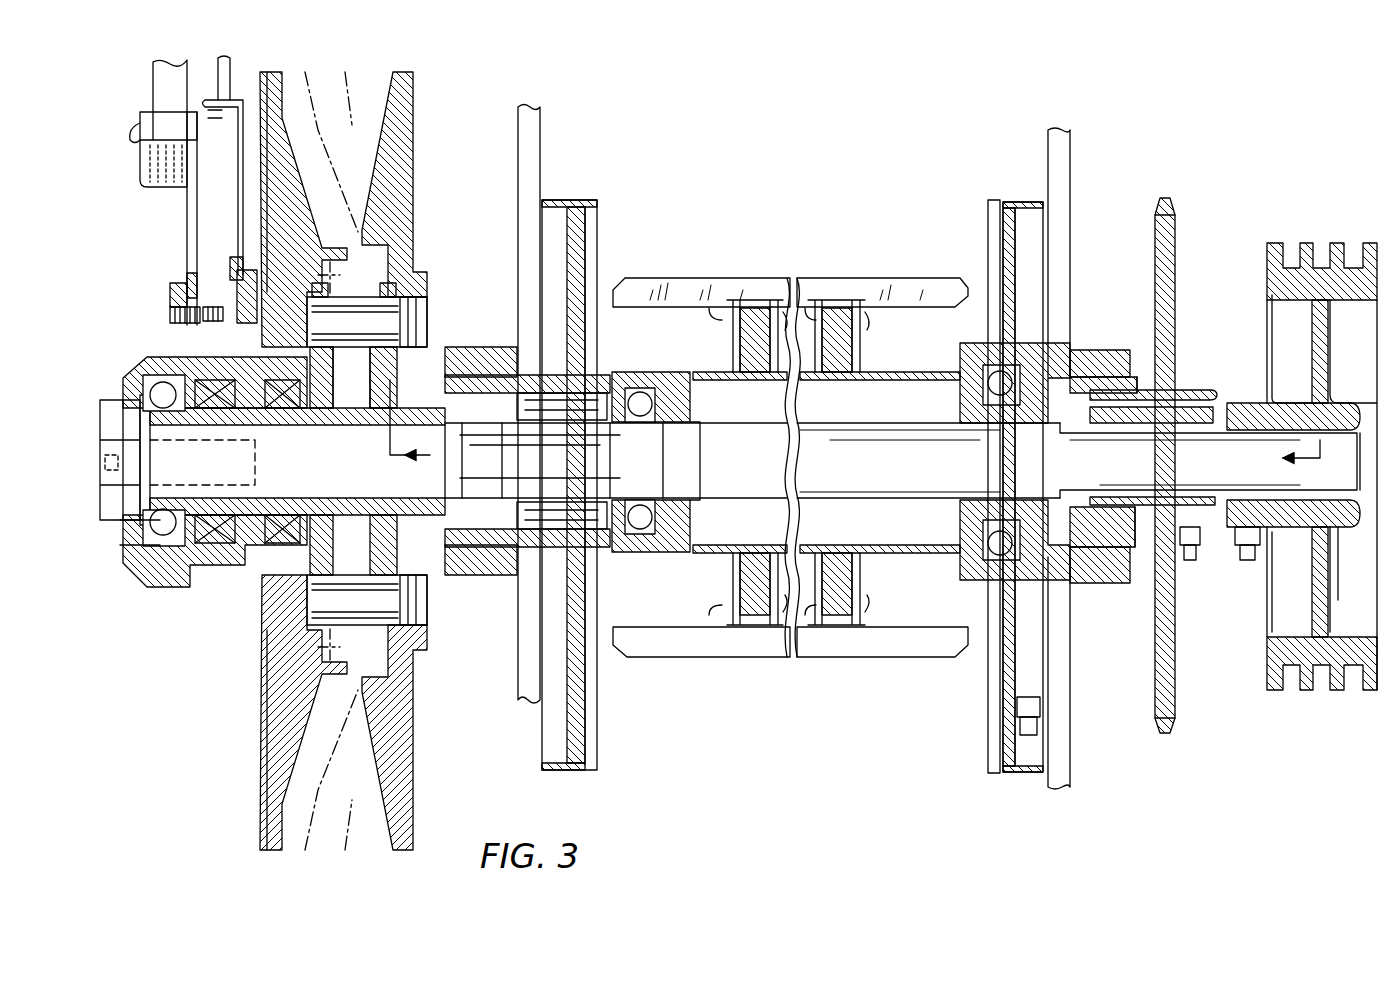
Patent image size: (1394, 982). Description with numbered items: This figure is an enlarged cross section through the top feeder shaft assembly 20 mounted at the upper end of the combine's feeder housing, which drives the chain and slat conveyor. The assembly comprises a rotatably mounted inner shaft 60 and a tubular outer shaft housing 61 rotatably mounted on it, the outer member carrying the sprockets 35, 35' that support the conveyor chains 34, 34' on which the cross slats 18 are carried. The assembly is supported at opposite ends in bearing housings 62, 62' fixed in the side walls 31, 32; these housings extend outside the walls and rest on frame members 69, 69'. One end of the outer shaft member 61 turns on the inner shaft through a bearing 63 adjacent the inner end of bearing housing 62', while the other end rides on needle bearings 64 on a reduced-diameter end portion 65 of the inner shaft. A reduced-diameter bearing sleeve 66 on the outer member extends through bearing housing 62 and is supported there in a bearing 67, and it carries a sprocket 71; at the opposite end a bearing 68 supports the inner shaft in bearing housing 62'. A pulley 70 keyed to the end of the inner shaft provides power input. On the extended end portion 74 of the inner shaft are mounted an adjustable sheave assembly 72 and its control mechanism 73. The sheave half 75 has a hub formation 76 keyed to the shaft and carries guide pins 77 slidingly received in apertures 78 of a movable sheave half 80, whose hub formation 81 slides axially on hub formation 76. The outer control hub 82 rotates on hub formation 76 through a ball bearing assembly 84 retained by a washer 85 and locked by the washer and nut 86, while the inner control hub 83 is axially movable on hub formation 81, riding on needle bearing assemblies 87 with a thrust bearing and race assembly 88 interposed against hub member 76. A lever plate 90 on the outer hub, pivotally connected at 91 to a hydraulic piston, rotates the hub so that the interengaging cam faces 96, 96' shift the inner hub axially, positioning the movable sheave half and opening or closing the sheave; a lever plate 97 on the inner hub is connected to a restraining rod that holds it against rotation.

The cross slats 18 is at (878, 288).
The top feeder shaft assembly 20 is at (1087, 308).
The side wall 31 is at (588, 272).
The side wall 32 is at (990, 242).
The chain 34 is at (851, 589).
The chain 34' is at (740, 589).
The sprocket 35 is at (837, 310).
The sprocket 35' is at (748, 309).
The inner shaft 60 is at (892, 477).
The tubular outer shaft housing 61 is at (872, 372).
The bearing housing 62 is at (1010, 367).
The bearing housing 62' is at (644, 440).
The bearing 63 is at (652, 555).
The needle bearings 64 is at (1140, 385).
The end portion 65 is at (1200, 535).
The bearing sleeve 66 is at (1082, 560).
The bearing 67 is at (980, 575).
The bearing 68 is at (476, 358).
The frame member 69 is at (1129, 497).
The frame member 69' is at (527, 559).
The pulley 70 is at (1342, 248).
The sprocket 71 is at (1165, 668).
The adjustable sheave assembly 72 is at (418, 240).
The control mechanism 73 is at (162, 338).
The extended end portion 74 is at (362, 442).
The sheave half 75 is at (398, 735).
The hub formation 76 is at (330, 418).
The guide pins 77 is at (364, 331).
The apertures 78 is at (287, 625).
The movable sheave half 80 is at (272, 820).
The hub formation 81 is at (246, 440).
The outer control hub 82 is at (152, 358).
The inner control hub 83 is at (212, 346).
The ball bearing assembly 84 is at (150, 520).
The washer 85 is at (135, 362).
The washer and nut 86 is at (118, 410).
The needle bearing assemblies 87 is at (230, 410).
The thrust bearing and race assembly 88 is at (272, 380).
The lever plate 90 is at (188, 226).
The pivotal connection 91 is at (130, 133).
The cam face 96 is at (216, 445).
The cam face 96' is at (337, 311).
The lever plate 97 is at (240, 176).